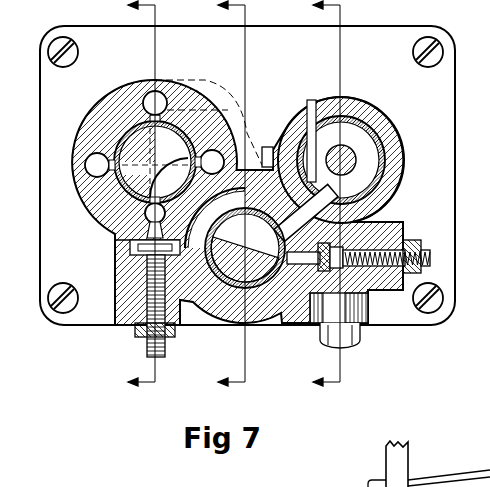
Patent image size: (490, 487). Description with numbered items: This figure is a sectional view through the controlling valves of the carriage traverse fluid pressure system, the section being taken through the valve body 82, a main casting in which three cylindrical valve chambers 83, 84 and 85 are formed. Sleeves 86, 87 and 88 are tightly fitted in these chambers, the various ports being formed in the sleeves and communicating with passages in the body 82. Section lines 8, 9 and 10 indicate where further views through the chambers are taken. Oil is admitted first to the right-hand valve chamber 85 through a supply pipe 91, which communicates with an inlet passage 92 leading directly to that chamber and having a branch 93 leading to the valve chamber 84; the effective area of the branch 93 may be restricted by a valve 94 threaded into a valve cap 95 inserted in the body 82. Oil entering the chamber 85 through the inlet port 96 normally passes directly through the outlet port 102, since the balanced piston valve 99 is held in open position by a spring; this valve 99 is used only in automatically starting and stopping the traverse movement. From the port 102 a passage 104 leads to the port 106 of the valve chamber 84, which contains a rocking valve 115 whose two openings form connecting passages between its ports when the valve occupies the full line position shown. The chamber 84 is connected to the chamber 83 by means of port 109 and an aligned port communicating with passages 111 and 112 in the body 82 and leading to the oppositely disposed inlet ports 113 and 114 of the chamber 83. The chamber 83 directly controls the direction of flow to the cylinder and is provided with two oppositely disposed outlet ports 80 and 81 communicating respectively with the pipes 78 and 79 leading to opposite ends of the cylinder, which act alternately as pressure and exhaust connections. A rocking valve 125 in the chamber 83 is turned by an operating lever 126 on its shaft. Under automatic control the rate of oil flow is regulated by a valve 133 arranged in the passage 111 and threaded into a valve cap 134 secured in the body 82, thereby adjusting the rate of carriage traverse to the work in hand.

The section line 8- 8 is at (326, 202).
The section line 9- 9 is at (231, 202).
The section line 10- 10 is at (141, 202).
The pipe 78 is at (97, 166).
The pipe 79 is at (225, 118).
The outlet port 80 is at (115, 152).
The outlet port 81 is at (210, 110).
The valve body 82 is at (120, 241).
The valve chamber 83 is at (155, 162).
The valve chamber 84 is at (223, 284).
The valve chamber 85 is at (341, 160).
The sleeve 86 is at (112, 125).
The sleeve 87 is at (216, 280).
The sleeve 88 is at (380, 163).
The supply pipe 91 is at (354, 336).
The inlet passage 92 is at (392, 220).
The branch passage 93 is at (308, 262).
The valve 94 is at (431, 258).
The valve cap 95 is at (393, 283).
The inlet port 96 is at (400, 205).
The balanced piston valve 99 is at (341, 155).
The outlet port 102 is at (312, 175).
The passage 104 is at (306, 212).
The port 106 is at (273, 302).
The port 109 is at (267, 146).
The passage 111 is at (215, 218).
The passage 112 is at (150, 100).
The inlet port 113 is at (97, 226).
The inlet port 114 is at (153, 133).
The rocking valve 115 is at (252, 282).
The rocking valve 125 is at (100, 207).
The operating lever 126 is at (394, 460).
The valve 133 is at (147, 348).
The valve cap 134 is at (113, 318).